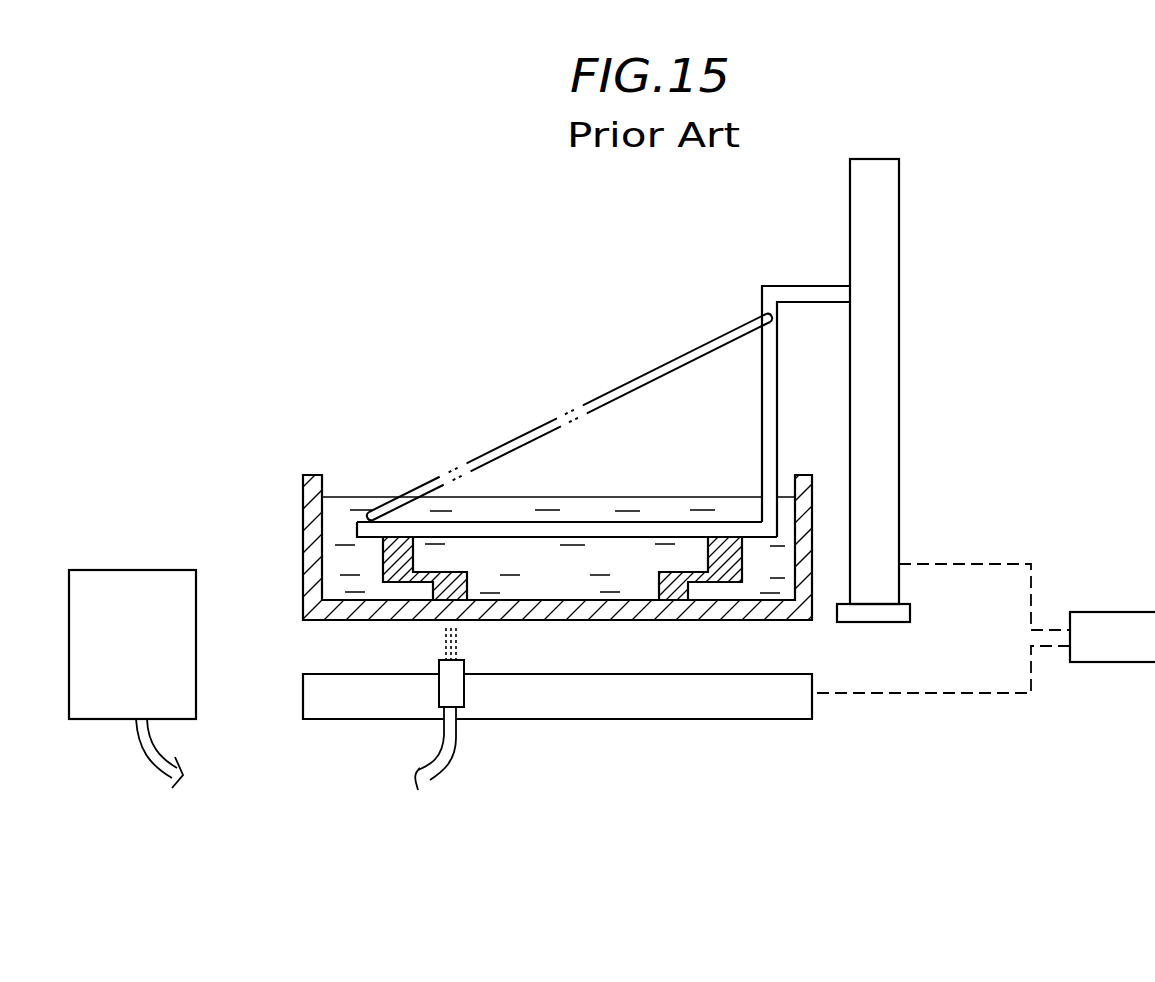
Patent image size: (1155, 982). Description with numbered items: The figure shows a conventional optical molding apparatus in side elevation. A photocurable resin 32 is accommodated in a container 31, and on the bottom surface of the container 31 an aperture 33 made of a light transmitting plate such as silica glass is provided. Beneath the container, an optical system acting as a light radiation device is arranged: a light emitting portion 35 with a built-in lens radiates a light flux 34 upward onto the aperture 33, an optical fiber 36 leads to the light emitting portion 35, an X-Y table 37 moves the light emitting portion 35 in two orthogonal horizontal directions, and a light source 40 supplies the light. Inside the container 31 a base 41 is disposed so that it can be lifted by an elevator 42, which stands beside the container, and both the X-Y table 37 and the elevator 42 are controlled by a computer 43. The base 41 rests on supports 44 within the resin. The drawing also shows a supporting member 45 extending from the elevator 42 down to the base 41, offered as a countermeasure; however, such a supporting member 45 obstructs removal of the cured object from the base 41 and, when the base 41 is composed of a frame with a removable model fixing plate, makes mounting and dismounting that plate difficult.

The container 31 is at (303, 497).
The photocurable resin 32 is at (341, 505).
The aperture 33 is at (725, 620).
The light flux 34 is at (460, 640).
The light emitting portion 35 is at (439, 662).
The optical fiber 36 is at (456, 752).
The X-Y table 37 is at (705, 719).
The light source 40 is at (130, 582).
The base 41 is at (583, 525).
The elevator 42 is at (899, 368).
The computer 43 is at (1105, 612).
The support blocks 44 is at (413, 553).
The supporting member 45 is at (550, 418).